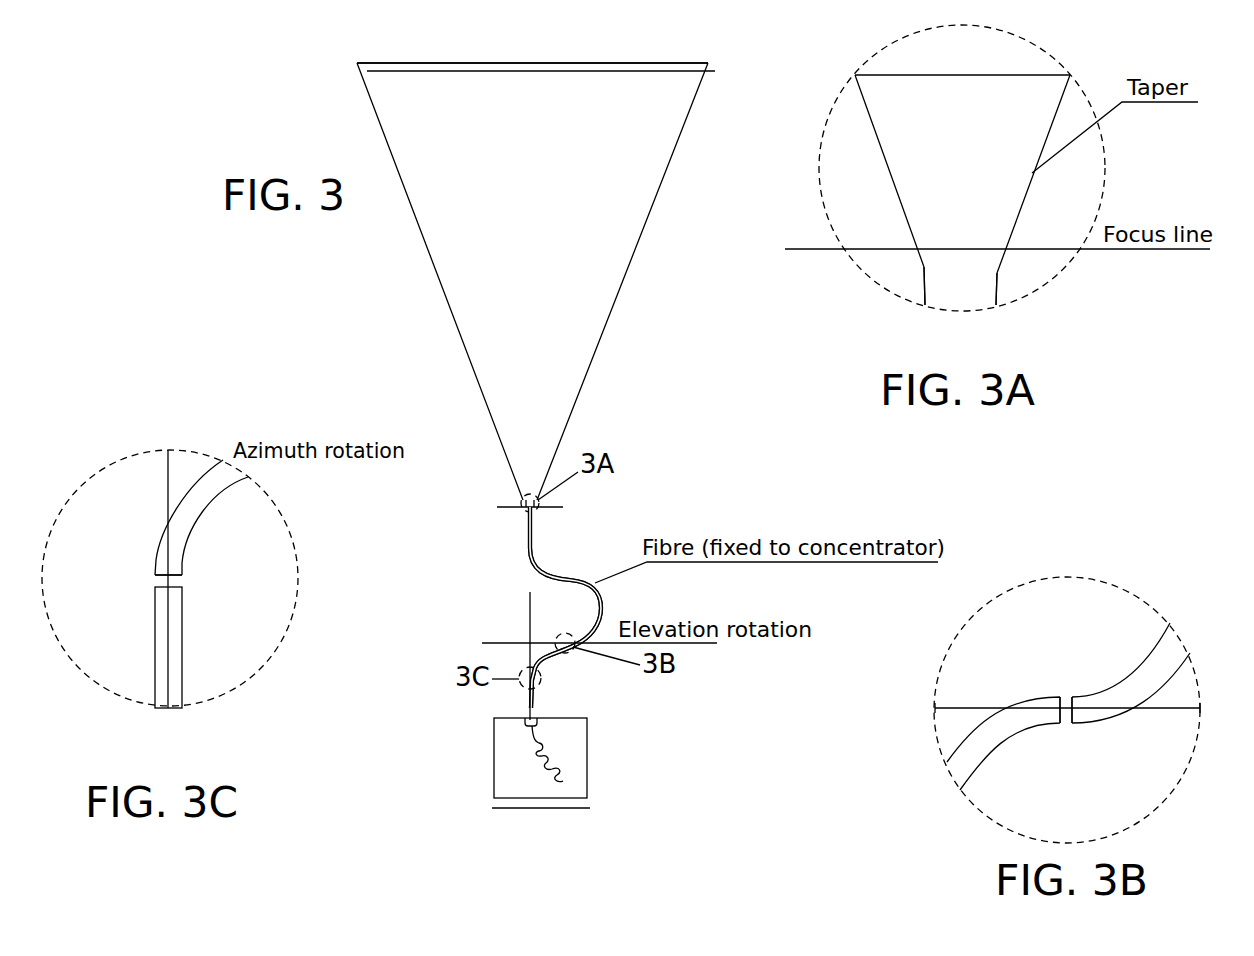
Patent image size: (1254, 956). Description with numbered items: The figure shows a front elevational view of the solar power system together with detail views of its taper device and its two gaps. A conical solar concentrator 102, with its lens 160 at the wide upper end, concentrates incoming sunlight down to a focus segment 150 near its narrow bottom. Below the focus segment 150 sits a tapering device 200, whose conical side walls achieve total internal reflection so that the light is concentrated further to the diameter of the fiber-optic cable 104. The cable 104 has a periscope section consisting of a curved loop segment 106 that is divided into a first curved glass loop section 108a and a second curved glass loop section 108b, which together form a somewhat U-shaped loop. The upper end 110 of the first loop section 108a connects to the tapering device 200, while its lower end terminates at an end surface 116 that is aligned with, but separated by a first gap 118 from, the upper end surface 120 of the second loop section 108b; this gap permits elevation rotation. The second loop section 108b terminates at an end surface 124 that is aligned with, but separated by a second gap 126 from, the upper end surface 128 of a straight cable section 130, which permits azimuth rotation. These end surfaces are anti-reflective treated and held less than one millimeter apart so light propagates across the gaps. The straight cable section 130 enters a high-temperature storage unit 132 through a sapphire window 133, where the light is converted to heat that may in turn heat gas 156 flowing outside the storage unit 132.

In FIG. 3, the solar concentrator 102 is at (440, 283).
In FIG. 3, the lens 160 is at (398, 62).
In FIG. 3, the fiber-optic cable 104 is at (556, 566).
In FIG. 3, the first curved glass loop section 108a is at (528, 553).
In FIG. 3A, the first curved glass loop section 108a is at (942, 290).
In FIG. 3B, the first curved glass loop section 108a is at (1158, 650).
In FIG. 3, the second curved glass loop section 108b is at (538, 656).
In FIG. 3B, the second curved glass loop section 108b is at (973, 773).
In FIG. 3C, the second curved glass loop section 108b is at (193, 478).
In FIG. 3, the curved loop segment 106 is at (627, 593).
In FIG. 3, the straight cable section 130 is at (530, 701).
In FIG. 3C, the straight cable section 130 is at (153, 692).
In FIG. 3, the sapphire window 133 is at (538, 717).
In FIG. 3, the high-temperature storage unit 132 is at (583, 762).
In FIG. 3, the gas 156 is at (507, 806).
In FIG. 3A, the tapering device 200 is at (972, 137).
In FIG. 3A, the focus segment 150 is at (990, 252).
In FIG. 3A, the upper end 110 is at (972, 292).
In FIG. 3B, the upper end surface 120 is at (1056, 705).
In FIG. 3B, the end surface 116 is at (1074, 705).
In FIG. 3B, the first gap 118 is at (1067, 725).
In FIG. 3C, the end surface 124 is at (157, 563).
In FIG. 3C, the second gap 126 is at (157, 582).
In FIG. 3C, the upper end surface 128 is at (163, 594).